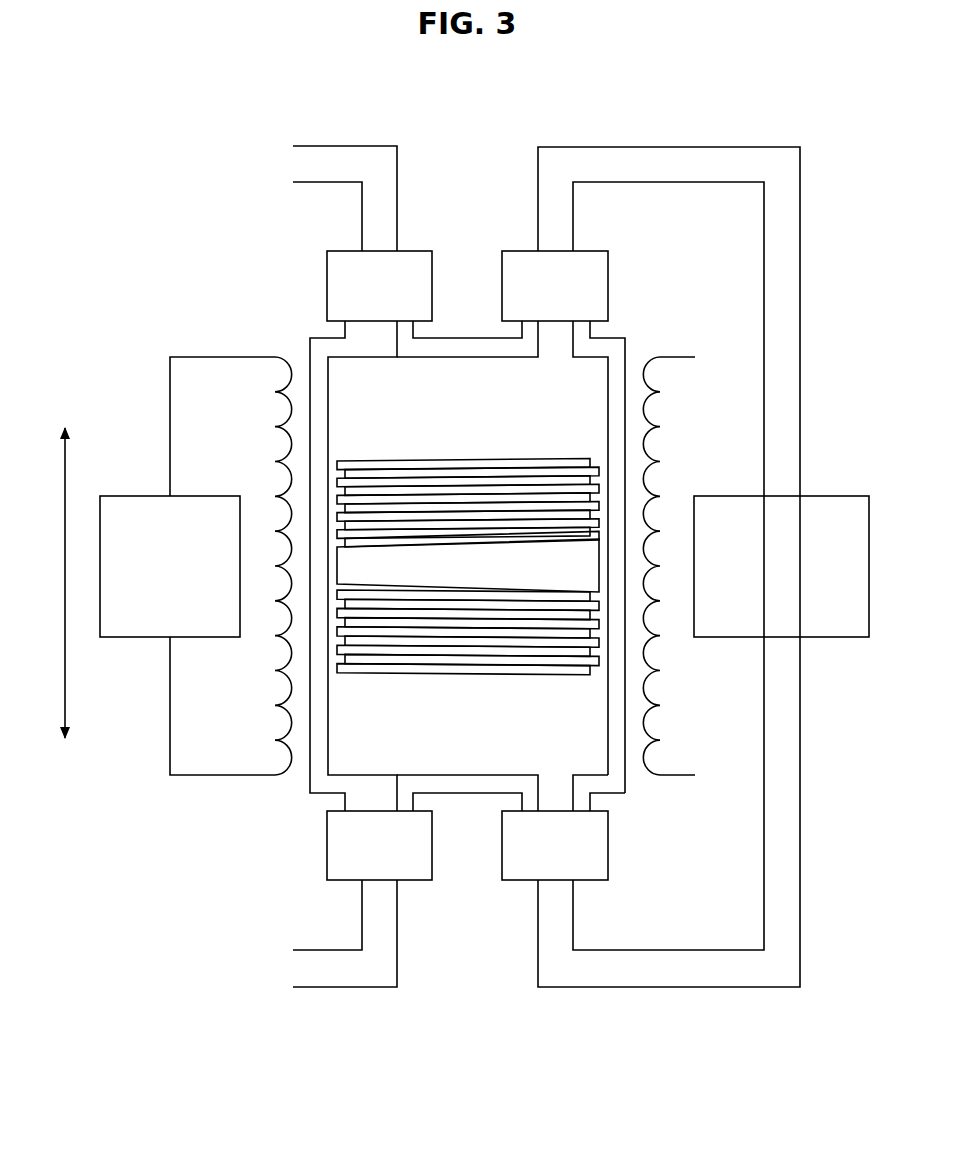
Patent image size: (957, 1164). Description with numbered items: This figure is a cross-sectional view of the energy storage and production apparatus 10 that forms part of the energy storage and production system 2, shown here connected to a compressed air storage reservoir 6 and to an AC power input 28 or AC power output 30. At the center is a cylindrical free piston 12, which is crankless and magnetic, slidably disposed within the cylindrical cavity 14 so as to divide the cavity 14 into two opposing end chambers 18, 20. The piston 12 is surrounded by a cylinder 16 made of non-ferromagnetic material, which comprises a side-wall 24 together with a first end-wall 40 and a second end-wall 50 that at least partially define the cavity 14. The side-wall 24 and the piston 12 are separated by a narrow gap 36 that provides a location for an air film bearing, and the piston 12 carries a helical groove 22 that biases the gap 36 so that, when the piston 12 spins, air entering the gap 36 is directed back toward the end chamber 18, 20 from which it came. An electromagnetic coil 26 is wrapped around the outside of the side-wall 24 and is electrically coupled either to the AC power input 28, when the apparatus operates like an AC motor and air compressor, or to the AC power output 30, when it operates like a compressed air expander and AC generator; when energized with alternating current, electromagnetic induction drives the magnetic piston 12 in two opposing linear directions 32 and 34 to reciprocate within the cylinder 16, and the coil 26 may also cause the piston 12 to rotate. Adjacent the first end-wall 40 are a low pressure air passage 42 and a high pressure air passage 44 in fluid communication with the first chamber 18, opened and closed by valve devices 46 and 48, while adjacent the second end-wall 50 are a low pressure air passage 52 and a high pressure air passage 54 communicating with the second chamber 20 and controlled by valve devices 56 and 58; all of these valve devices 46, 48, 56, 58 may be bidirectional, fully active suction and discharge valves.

The energy storage and production system 2 is at (138, 167).
The compressed air storage reservoir 6 is at (781, 566).
The energy storage and production apparatus 10 is at (252, 321).
The cylindrical free piston 12 is at (468, 565).
The cylindrical cavity 14 is at (595, 368).
The cylinder 16 is at (298, 807).
The first end chamber 18 is at (468, 409).
The second end chamber 20 is at (468, 724).
The helical groove 22 is at (594, 465).
The side-wall 24 is at (615, 783).
The electromagnetic coil 26 is at (292, 408).
The AC power input 28 is at (170, 566).
The AC power output 30 is at (170, 566).
The first linear direction 32 is at (65, 485).
The second linear direction 34 is at (65, 681).
The narrow gap 36 is at (332, 665).
The first end-wall 40 is at (467, 347).
The low pressure air passage 42 is at (345, 249).
The high pressure air passage 44 is at (669, 567).
The valve device 46 is at (379, 286).
The valve device 48 is at (555, 286).
The second end-wall 50 is at (467, 783).
The low pressure air passage 52 is at (345, 884).
The high pressure air passage 54 is at (611, 880).
The valve device 56 is at (379, 845).
The valve device 58 is at (555, 845).